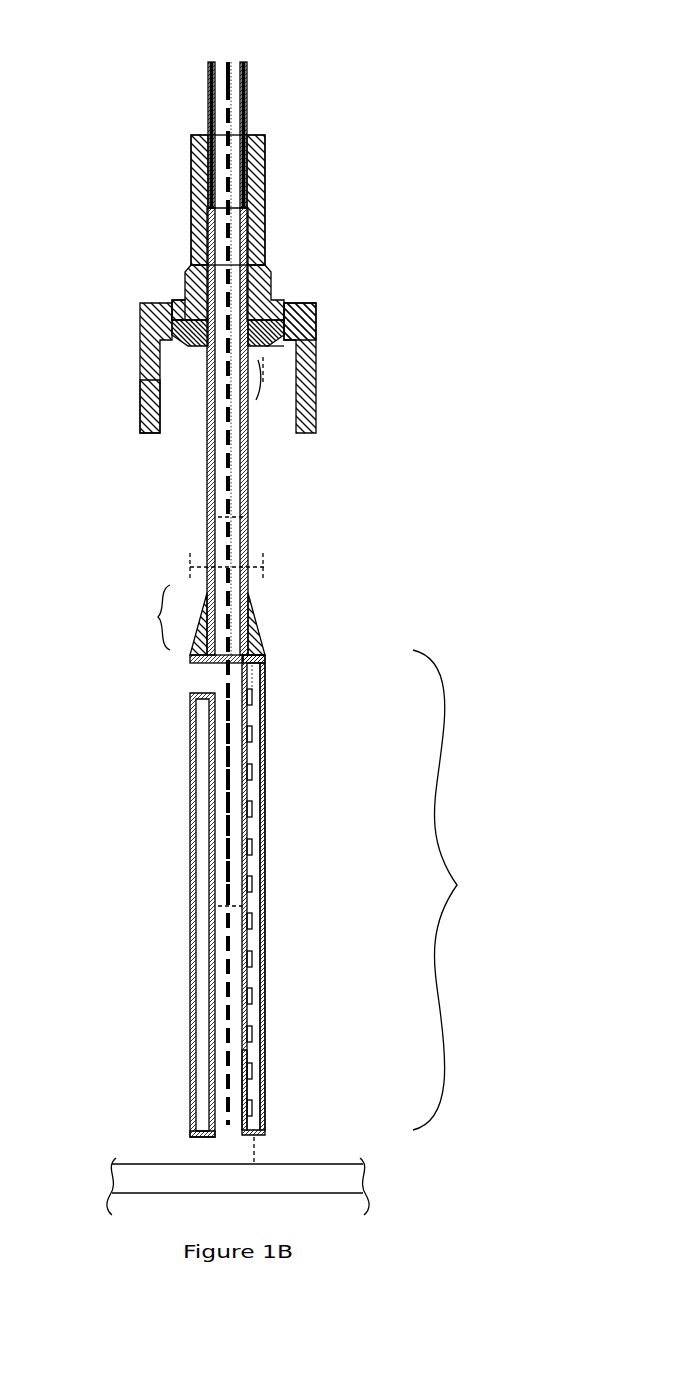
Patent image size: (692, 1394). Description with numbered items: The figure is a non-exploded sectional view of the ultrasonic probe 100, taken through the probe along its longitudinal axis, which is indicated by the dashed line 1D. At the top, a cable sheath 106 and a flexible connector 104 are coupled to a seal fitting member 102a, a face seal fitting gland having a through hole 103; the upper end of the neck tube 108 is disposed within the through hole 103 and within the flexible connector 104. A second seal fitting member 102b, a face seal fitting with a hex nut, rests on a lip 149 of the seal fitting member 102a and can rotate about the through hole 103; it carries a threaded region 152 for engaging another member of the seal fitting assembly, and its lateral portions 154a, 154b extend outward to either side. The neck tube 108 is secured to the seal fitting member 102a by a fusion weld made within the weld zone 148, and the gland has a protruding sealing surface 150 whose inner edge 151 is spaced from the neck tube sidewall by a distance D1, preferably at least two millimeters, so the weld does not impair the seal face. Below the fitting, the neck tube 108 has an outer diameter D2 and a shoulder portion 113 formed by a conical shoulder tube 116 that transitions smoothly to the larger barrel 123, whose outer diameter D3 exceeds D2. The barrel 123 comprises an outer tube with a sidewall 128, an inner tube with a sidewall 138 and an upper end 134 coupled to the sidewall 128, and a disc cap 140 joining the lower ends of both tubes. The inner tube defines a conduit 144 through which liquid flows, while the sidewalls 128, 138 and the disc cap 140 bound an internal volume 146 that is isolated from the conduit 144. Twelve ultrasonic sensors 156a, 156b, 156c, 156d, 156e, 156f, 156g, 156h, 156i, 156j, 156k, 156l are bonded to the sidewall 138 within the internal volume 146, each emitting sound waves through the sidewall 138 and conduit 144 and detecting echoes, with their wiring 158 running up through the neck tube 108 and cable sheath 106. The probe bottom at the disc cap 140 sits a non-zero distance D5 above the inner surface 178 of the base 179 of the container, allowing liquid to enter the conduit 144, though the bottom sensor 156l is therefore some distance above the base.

The ultrasonic probe 100 is at (96, 162).
The longitudinal axis 1D is at (228, 62).
The cable sheath 106 is at (245, 88).
The flexible connector 104 is at (265, 192).
The through hole 103 is at (253, 277).
The seal fitting member 102a is at (268, 283).
The seal fitting member 102b is at (305, 303).
The weld zone 148 is at (202, 345).
The lip 149 is at (185, 302).
The flange leg 154a is at (140, 340).
The flange leg 154b is at (312, 334).
The threaded region 152 is at (161, 398).
The inner edge 151 is at (275, 345).
The protruding sealing surface 150 is at (283, 345).
The distance D1 is at (262, 388).
The neck tube 108 is at (250, 547).
The outer diameter D2 is at (224, 518).
The outer diameter D3 is at (225, 567).
The shoulder tube 116 is at (250, 607).
The shoulder portion 113 is at (158, 617).
The upper end 134 is at (190, 694).
The internal volume 146 is at (250, 795).
The wiring 158 is at (260, 658).
The ultrasonic sensor 156a is at (251, 697).
The ultrasonic sensor 156b is at (251, 734).
The ultrasonic sensor 156c is at (251, 772).
The ultrasonic sensor 156d is at (251, 809).
The ultrasonic sensor 156e is at (251, 847).
The ultrasonic sensor 156f is at (251, 884).
The ultrasonic sensor 156g is at (251, 921).
The ultrasonic sensor 156h is at (251, 959).
The ultrasonic sensor 156i is at (251, 996).
The ultrasonic sensor 156j is at (251, 1034).
The ultrasonic sensor 156k is at (251, 1071).
The ultrasonic sensor 156l is at (251, 1108).
The conduit 144 is at (223, 832).
The sidewall 128 is at (262, 1040).
The barrel 123 is at (458, 890).
The sidewall 138 is at (243, 1063).
The disc cap 140 is at (197, 1131).
The distance D5 is at (260, 1154).
The inner surface 178 is at (345, 1165).
The base 179 is at (180, 1195).